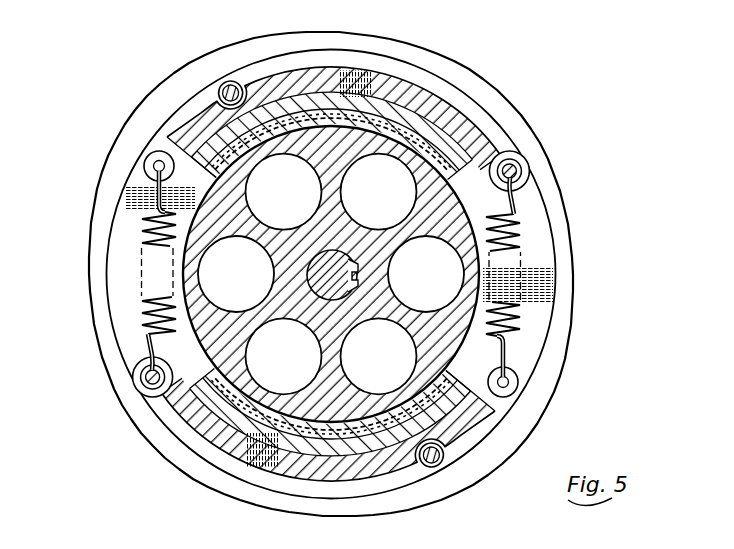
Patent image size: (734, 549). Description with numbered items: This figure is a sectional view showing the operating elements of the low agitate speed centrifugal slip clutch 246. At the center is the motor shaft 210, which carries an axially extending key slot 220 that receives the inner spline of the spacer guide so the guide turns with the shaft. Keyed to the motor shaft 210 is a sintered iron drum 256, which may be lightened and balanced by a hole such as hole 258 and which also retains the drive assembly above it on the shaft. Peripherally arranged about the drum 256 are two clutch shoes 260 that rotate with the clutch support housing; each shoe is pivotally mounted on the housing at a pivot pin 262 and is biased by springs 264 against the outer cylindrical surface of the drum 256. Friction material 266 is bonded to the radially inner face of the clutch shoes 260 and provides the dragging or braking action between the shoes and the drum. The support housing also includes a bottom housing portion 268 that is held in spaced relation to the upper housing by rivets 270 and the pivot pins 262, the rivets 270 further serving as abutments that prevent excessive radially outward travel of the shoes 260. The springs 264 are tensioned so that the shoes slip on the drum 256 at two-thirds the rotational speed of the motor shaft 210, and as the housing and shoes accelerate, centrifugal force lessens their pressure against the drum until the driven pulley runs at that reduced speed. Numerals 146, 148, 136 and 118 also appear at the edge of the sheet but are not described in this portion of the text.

The centrifugal clutch 246 is at (553, 330).
The bottom housing portion 268 is at (546, 275).
The clutch shoes 260 is at (394, 115).
The friction material 266 is at (426, 128).
The motor shaft 210 is at (354, 223).
The hole 258 is at (276, 228).
The sintered iron drum 256 is at (412, 323).
The key slot 220 is at (351, 292).
The rivets 270 is at (228, 88).
The pivot pins 262 is at (522, 170).
The springs 264 is at (142, 199).
The element 146 is at (203, 540).
The element 148 is at (281, 548).
The element 136 is at (315, 543).
The element 118 is at (417, 541).